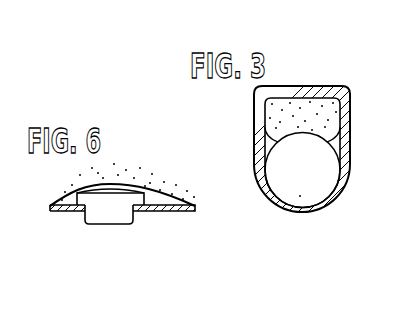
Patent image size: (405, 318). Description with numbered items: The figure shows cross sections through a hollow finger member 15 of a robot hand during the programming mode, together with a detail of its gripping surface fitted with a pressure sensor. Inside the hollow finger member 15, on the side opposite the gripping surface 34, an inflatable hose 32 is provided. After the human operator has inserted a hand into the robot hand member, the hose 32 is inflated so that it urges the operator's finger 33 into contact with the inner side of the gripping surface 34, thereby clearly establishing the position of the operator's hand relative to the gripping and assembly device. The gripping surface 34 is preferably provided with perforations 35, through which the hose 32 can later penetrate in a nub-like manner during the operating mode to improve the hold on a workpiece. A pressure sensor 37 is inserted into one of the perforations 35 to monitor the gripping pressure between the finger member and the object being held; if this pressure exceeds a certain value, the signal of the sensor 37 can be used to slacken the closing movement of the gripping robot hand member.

In FIG. 3, the hollow finger member 15 is at (254, 148).
In FIG. 3, the inflatable hose 32 is at (318, 106).
In FIG. 6, the inflatable hose 32 is at (163, 213).
In FIG. 3, the operator's finger 33 is at (330, 175).
In FIG. 3, the gripping surface 34 is at (283, 213).
In FIG. 6, the gripping surface 34 is at (66, 212).
In FIG. 6, the perforations 35 is at (134, 214).
In FIG. 6, the pressure sensor 37 is at (106, 218).